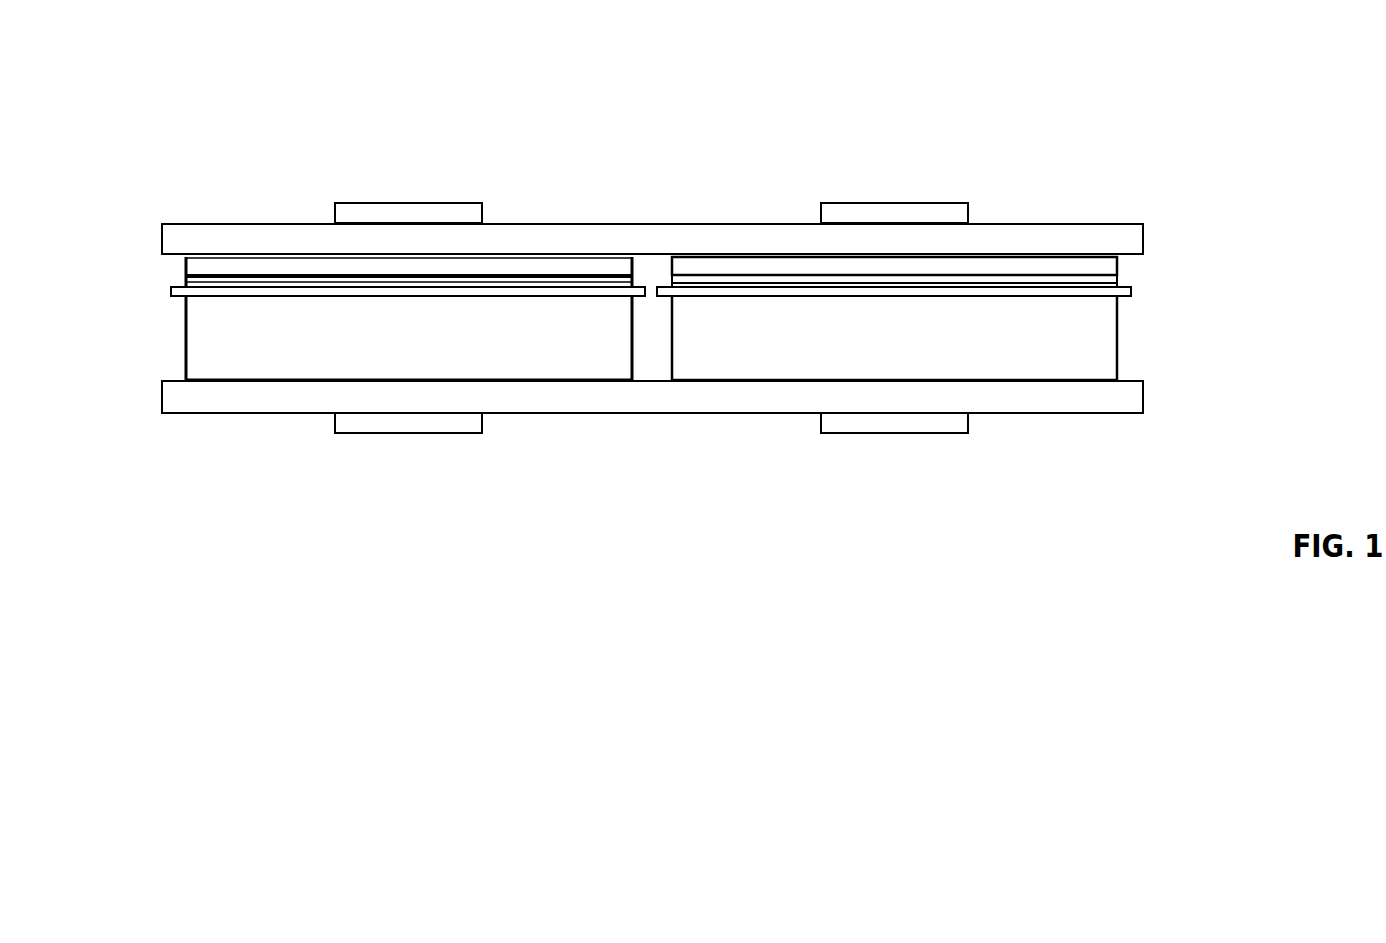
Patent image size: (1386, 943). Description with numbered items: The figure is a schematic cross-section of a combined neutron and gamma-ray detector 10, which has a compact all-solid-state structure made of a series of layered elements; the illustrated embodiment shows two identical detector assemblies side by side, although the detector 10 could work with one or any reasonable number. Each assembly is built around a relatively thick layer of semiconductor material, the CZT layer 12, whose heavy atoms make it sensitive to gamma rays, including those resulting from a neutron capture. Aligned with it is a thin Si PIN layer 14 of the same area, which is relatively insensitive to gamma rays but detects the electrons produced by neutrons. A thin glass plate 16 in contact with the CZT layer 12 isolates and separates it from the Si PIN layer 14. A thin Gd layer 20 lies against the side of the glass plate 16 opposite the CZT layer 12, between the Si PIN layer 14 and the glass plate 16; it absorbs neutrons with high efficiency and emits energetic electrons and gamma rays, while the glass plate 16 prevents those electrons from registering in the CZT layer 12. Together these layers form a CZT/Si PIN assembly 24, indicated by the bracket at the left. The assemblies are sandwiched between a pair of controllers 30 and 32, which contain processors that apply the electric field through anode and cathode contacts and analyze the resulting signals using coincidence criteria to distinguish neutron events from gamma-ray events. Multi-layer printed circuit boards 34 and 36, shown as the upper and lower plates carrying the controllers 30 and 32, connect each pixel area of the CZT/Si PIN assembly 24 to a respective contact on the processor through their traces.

The detector 10 is at (480, 152).
The CZT layer 12 is at (1105, 345).
The Si PIN layer 14 is at (1107, 267).
The glass plate 16 is at (1130, 293).
The Gd layer 20 is at (1107, 280).
The CZT/Si PIN assembly 24 is at (148, 255).
The controller 30 is at (365, 208).
The controller 32 is at (438, 428).
The printed circuit board 34 is at (1107, 235).
The printed circuit board 36 is at (1105, 400).